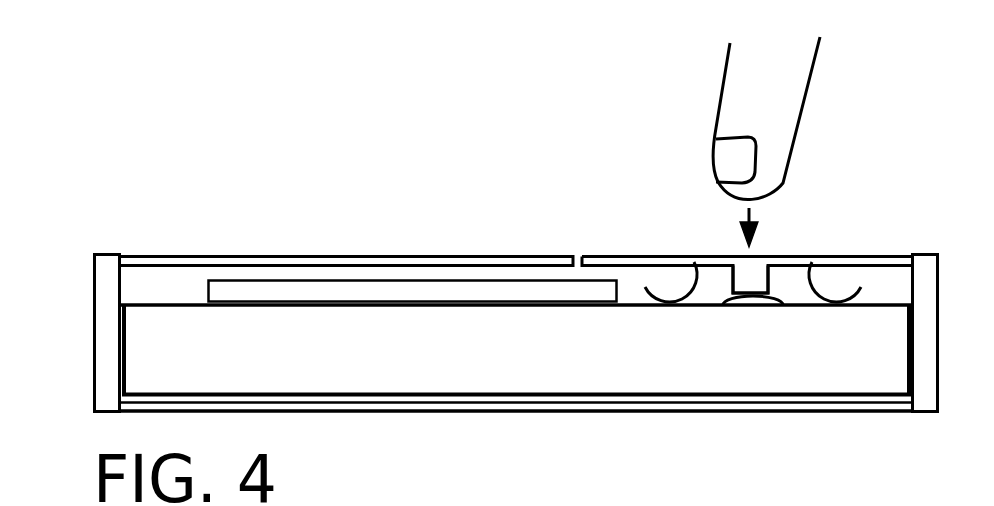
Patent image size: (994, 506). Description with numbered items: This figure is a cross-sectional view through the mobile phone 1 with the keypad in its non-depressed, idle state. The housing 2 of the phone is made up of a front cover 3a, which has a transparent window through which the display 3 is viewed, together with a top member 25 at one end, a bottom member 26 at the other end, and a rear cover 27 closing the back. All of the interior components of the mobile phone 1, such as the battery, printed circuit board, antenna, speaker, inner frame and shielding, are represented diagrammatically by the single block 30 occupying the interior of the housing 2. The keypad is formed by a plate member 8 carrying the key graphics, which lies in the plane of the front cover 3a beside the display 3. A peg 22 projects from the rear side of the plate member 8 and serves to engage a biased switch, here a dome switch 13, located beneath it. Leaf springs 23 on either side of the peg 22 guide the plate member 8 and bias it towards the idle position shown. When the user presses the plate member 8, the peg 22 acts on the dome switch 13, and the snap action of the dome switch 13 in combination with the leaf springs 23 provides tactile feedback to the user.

The mobile phone 1 is at (362, 99).
The housing 2 is at (94, 408).
The display 3 is at (400, 297).
The front cover 3a is at (263, 266).
The plate member 8 is at (642, 258).
The dome switch 13 is at (750, 308).
The peg 22 is at (760, 257).
The leaf springs 23 is at (693, 268).
The top member 25 is at (105, 268).
The bottom member 26 is at (923, 392).
The rear cover 27 is at (487, 404).
The block 30 is at (410, 355).